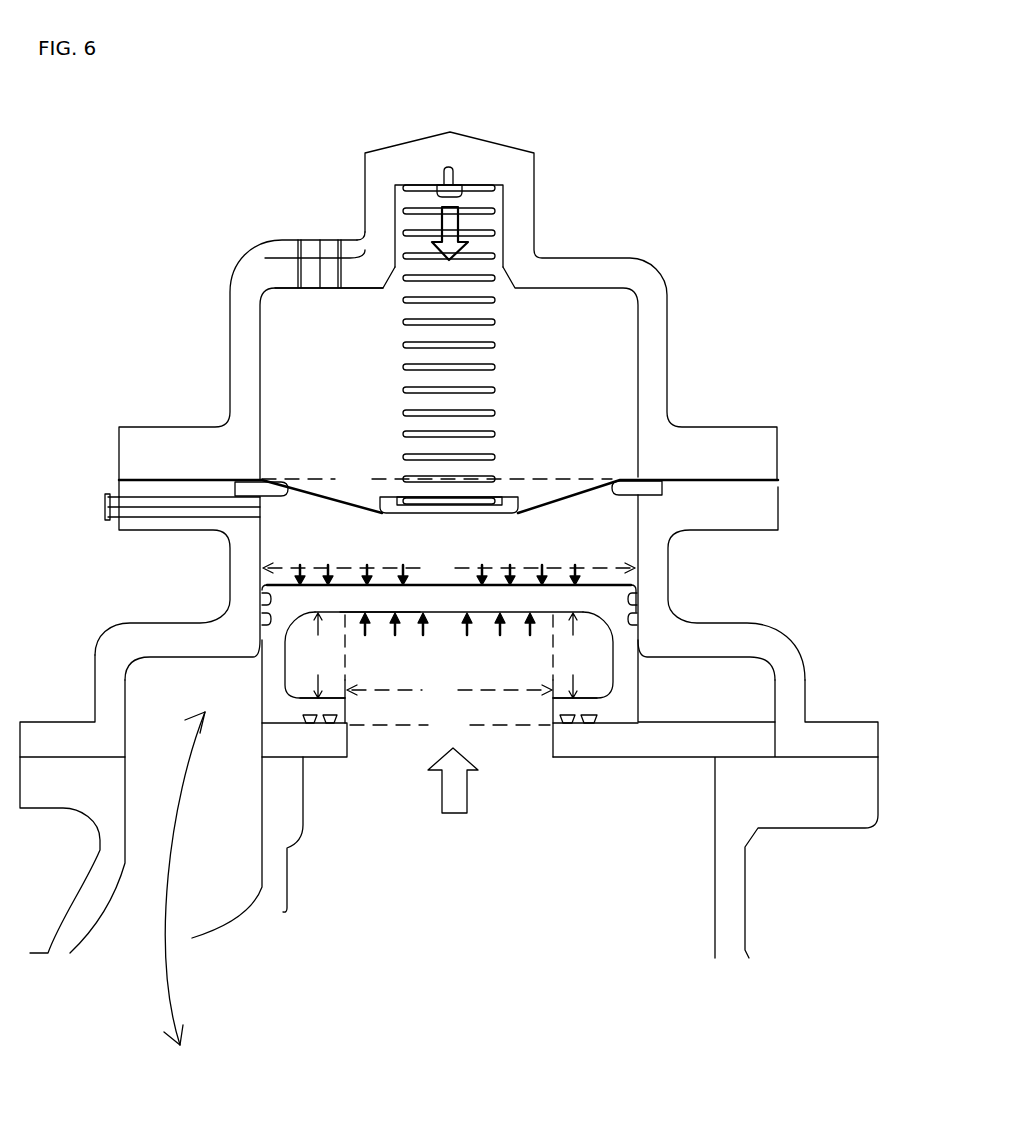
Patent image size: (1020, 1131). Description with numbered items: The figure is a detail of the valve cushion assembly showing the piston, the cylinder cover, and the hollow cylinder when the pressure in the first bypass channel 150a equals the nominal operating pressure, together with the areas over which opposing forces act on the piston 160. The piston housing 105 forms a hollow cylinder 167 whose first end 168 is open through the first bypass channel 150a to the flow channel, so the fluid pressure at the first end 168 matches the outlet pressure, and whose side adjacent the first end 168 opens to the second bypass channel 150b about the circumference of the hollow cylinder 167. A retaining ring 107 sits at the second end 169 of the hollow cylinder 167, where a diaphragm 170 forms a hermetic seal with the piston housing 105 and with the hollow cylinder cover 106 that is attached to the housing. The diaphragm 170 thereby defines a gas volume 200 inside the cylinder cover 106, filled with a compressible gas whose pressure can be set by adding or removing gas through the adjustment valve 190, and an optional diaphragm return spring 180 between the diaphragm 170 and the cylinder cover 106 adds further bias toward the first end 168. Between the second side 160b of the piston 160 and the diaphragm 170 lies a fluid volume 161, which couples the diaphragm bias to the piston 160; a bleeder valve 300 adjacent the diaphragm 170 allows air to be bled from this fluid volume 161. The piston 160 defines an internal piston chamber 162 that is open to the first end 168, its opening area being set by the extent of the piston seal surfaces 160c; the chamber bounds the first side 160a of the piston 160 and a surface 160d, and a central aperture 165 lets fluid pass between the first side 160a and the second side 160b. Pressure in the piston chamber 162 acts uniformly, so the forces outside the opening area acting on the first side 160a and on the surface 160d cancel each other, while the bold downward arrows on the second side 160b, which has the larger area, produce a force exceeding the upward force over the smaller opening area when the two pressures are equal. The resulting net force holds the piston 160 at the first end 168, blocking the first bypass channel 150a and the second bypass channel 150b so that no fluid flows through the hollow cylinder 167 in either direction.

The hollow cylinder cover 106 is at (690, 428).
The adjustment valve 190 is at (310, 238).
The gas volume 200 is at (570, 342).
The diaphragm return spring 180 is at (405, 412).
The diaphragm 170 is at (587, 483).
The retaining ring 107 is at (662, 495).
The second end of the hollow cylinder 169 is at (437, 479).
The bleeder valve 300 is at (103, 495).
The piston housing 105 is at (778, 637).
The second bypass channel 150b is at (762, 709).
The first bypass channel 150a is at (463, 817).
The hollow cylinder 167 is at (258, 545).
The central aperture 165 is at (445, 610).
The second side of the piston 160b is at (350, 585).
The fluid volume 161 is at (538, 552).
The piston chamber 162 is at (533, 676).
The piston 160 is at (607, 627).
The first side of the piston 160a is at (382, 613).
The surface of the piston chamber 160d is at (317, 698).
The piston seal surface 160c is at (320, 725).
The first end of the hollow cylinder 168 is at (450, 726).